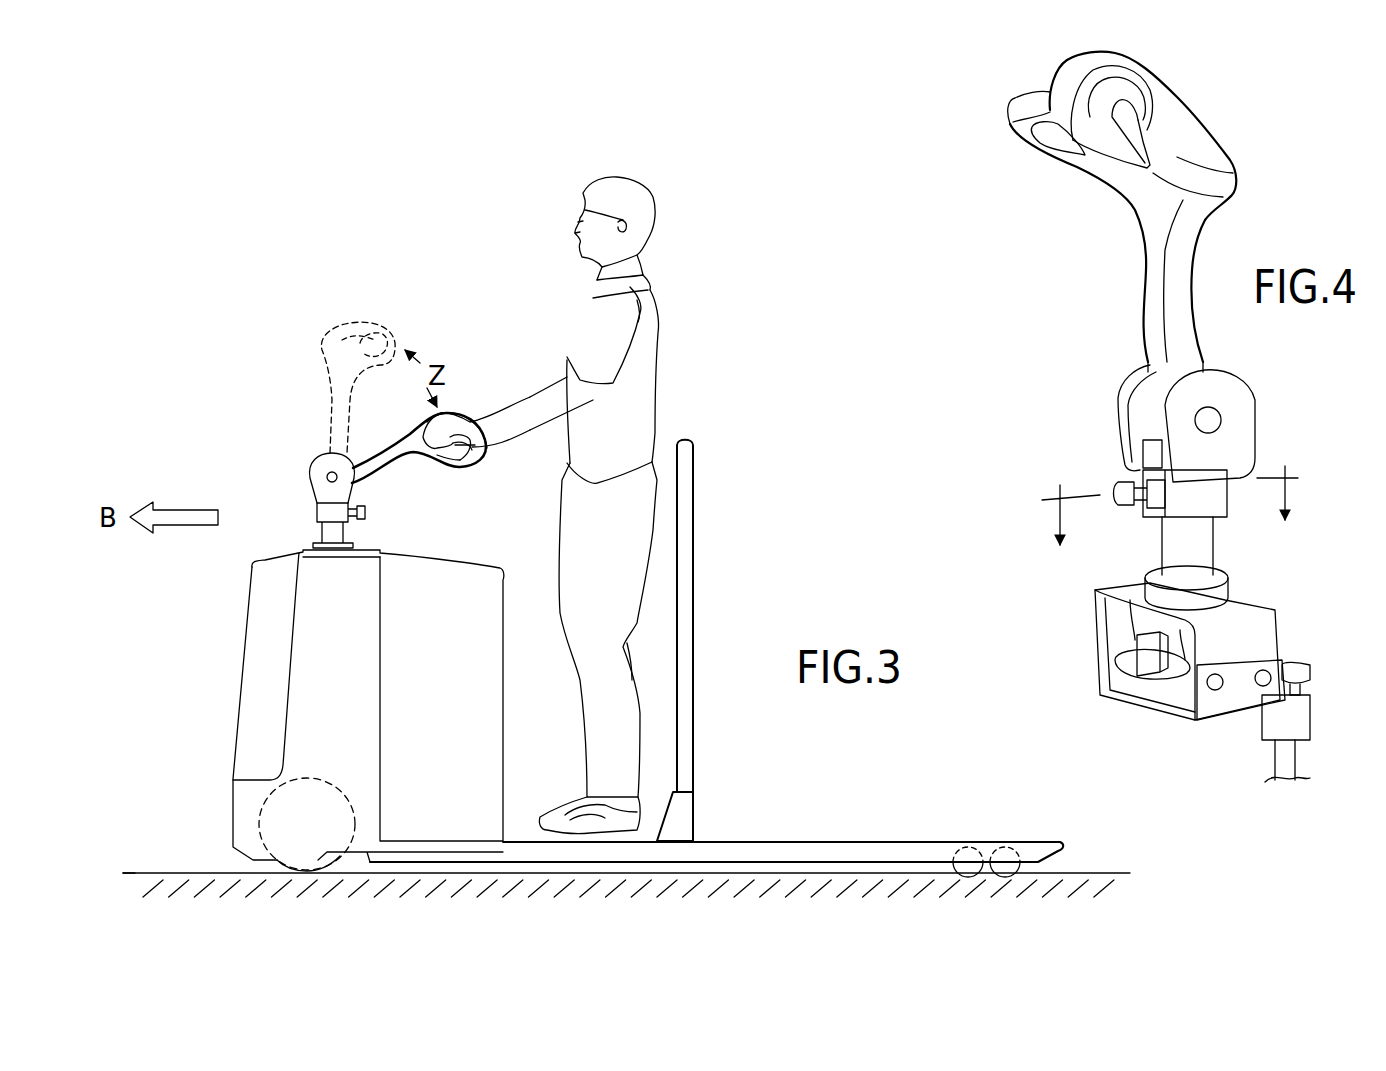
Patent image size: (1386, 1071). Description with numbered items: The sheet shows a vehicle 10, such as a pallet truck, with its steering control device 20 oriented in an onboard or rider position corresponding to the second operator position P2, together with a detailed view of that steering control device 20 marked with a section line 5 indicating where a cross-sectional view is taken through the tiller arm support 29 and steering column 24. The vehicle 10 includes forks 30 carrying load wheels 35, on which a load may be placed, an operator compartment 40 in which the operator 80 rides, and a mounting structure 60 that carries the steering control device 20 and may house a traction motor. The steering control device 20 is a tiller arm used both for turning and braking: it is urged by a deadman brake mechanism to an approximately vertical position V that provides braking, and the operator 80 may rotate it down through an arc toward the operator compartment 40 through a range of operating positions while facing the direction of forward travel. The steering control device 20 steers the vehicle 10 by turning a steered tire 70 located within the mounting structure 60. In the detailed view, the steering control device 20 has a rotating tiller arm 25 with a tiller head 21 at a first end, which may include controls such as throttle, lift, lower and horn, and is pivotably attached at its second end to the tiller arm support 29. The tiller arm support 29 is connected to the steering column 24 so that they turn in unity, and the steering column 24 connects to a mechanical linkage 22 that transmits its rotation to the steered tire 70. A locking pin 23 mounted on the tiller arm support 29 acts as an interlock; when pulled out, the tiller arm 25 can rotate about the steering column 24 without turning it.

In FIG. 3, the vehicle 10 is at (217, 377).
In FIG. 3, the steering control device 20 is at (477, 478).
In FIG. 4, the steering control device 20 is at (1262, 110).
In FIG. 4, the tiller head 21 is at (1008, 127).
In FIG. 4, the mechanical linkage 22 is at (1312, 713).
In FIG. 4, the locking pin 23 is at (1122, 488).
In FIG. 4, the steering column 24 is at (1160, 545).
In FIG. 4, the rotating tiller arm 25 is at (1140, 308).
In FIG. 4, the tiller arm support 29 is at (1118, 407).
In FIG. 3, the forks 30 is at (838, 842).
In FIG. 3, the load wheels 35 is at (963, 845).
In FIG. 3, the operator compartment 40 is at (657, 617).
In FIG. 3, the mounting structure 60 is at (447, 552).
In FIG. 3, the steered tire 70 is at (308, 777).
In FIG. 3, the operator 80 is at (623, 177).
In FIG. 4, the section line 5- 5 is at (1170, 488).
In FIG. 3, the vertical position V is at (330, 349).
In FIG. 3, the second operator position P2 is at (480, 400).